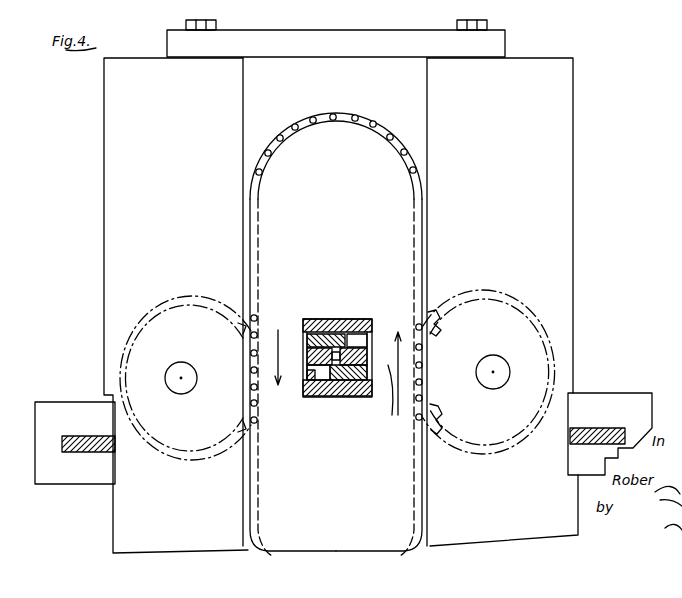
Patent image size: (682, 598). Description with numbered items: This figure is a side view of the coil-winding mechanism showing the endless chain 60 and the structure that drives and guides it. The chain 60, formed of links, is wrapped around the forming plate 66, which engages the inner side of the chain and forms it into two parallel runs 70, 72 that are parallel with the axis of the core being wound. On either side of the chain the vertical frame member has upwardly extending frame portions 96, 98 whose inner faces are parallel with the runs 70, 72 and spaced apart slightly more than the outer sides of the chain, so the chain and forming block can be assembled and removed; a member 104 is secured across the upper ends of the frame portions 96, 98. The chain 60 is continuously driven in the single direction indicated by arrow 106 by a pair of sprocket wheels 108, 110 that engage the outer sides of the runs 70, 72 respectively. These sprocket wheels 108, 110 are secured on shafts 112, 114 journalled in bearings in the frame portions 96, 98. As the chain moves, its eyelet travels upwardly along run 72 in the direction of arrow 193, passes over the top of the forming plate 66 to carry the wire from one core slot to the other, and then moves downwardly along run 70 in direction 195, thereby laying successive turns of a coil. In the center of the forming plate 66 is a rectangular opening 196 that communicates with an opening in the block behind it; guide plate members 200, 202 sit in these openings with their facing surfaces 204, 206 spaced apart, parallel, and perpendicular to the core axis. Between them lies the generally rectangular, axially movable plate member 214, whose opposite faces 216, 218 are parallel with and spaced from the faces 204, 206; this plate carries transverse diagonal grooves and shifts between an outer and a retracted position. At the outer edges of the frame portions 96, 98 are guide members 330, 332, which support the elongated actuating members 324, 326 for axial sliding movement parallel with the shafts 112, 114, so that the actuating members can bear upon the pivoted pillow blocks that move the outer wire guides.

The endless chain 60 is at (386, 132).
The forming plate 66 is at (387, 183).
The run 70 is at (246, 260).
The run 72 is at (420, 250).
The frame portion 96 is at (104, 230).
The frame portion 98 is at (560, 172).
The member 104 is at (371, 33).
The arrow 106 is at (297, 117).
The sprocket wheel 108 is at (164, 297).
The sprocket wheel 110 is at (500, 290).
The shaft 112 is at (181, 362).
The shaft 114 is at (495, 357).
The arrow 193 is at (400, 384).
The direction 195 is at (278, 352).
The rectangular opening 196 is at (353, 320).
The guide plate member 200 is at (348, 397).
The guide plate member 202 is at (326, 319).
The face 204 is at (308, 376).
The face 206 is at (370, 333).
The movable plate member 214 is at (372, 362).
The face 216 is at (322, 366).
The face 218 is at (350, 347).
The actuating member 324 is at (88, 446).
The actuating member 326 is at (606, 432).
The guide member 330 is at (71, 402).
The guide member 332 is at (607, 393).